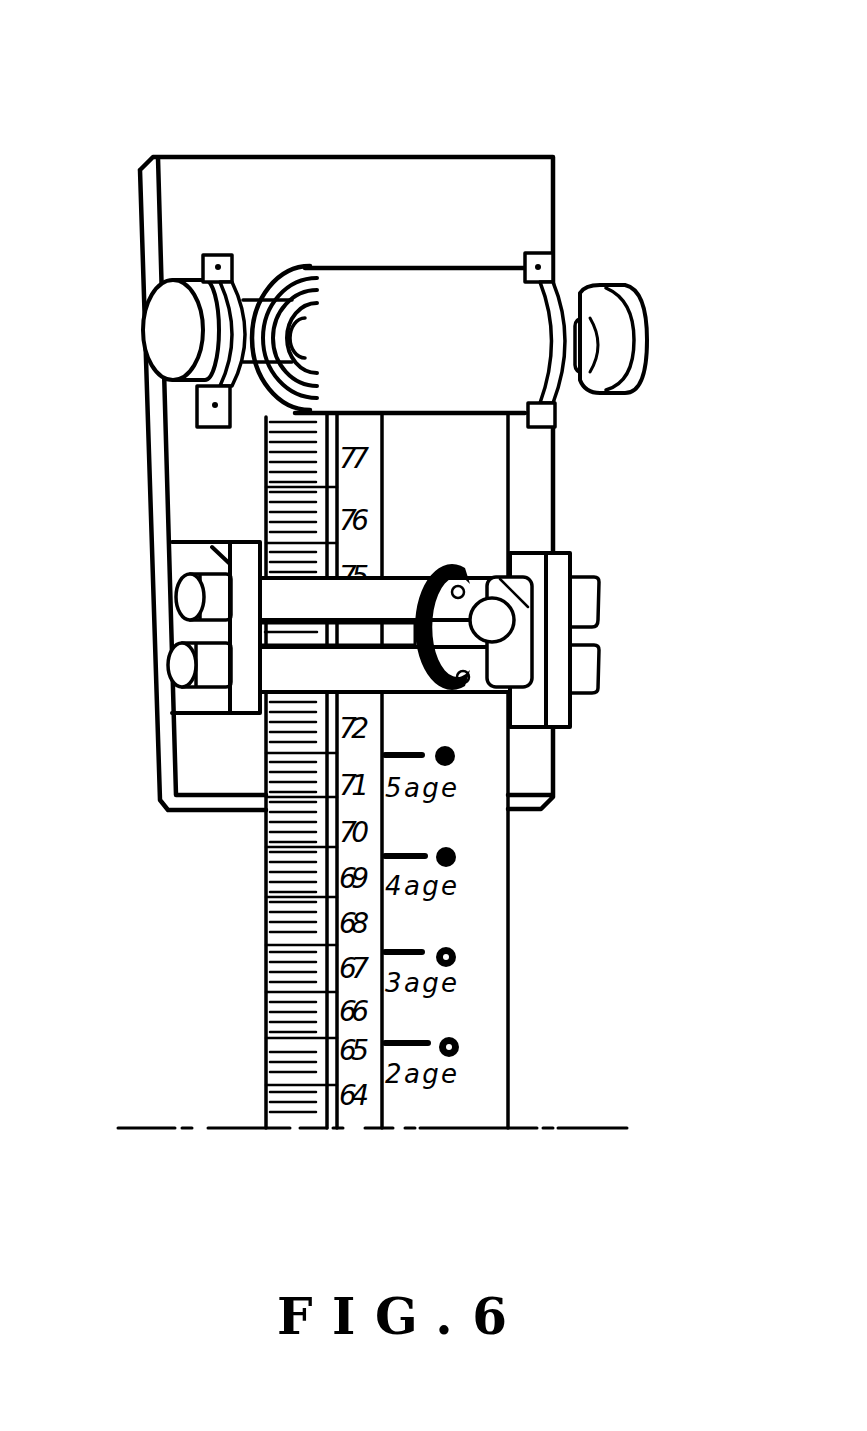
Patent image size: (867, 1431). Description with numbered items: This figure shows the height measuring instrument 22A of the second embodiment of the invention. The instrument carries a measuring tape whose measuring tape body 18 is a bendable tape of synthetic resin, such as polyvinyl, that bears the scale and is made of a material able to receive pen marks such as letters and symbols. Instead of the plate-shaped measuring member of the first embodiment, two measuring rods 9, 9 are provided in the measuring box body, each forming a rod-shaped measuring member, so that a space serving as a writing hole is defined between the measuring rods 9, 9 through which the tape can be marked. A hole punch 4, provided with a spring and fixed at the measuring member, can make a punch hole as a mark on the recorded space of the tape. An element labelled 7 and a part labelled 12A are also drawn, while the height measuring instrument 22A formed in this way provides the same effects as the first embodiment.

The height measuring instrument 22A is at (117, 150).
The measuring tape body 18 is at (484, 278).
The knob 7 is at (648, 336).
The hole punch 4 is at (496, 598).
The measuring rods 9 is at (168, 592).
The bracket with nuts 12A is at (580, 633).